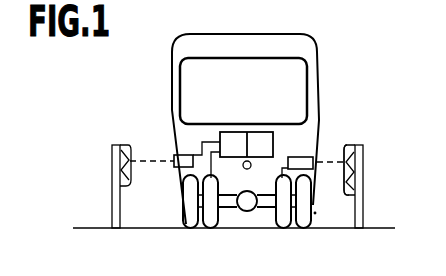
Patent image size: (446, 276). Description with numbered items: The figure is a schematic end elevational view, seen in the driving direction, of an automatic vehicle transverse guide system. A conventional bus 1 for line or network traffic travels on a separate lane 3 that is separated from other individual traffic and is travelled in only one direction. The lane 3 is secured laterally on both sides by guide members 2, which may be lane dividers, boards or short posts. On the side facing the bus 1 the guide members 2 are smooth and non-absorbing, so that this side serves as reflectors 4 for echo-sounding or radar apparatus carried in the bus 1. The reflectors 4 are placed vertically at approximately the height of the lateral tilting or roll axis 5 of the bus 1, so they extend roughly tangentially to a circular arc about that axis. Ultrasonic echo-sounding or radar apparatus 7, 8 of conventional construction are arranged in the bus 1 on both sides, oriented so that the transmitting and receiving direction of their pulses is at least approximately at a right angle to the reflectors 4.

The bus 1 is at (283, 33).
The guide members 2 is at (124, 144).
The lane 3 is at (173, 226).
The reflectors 4 is at (345, 152).
The lateral tilting or roll axis 5 is at (243, 162).
The ultrasonic echo-sounding or radar apparatus 7 is at (294, 157).
The ultrasonic echo-sounding or radar apparatus 8 is at (190, 155).